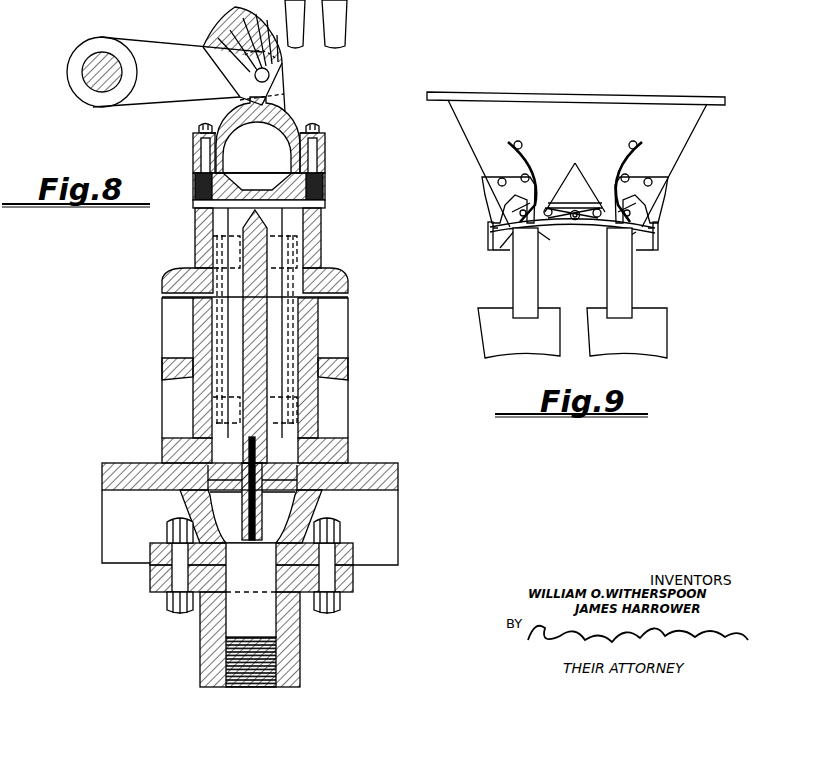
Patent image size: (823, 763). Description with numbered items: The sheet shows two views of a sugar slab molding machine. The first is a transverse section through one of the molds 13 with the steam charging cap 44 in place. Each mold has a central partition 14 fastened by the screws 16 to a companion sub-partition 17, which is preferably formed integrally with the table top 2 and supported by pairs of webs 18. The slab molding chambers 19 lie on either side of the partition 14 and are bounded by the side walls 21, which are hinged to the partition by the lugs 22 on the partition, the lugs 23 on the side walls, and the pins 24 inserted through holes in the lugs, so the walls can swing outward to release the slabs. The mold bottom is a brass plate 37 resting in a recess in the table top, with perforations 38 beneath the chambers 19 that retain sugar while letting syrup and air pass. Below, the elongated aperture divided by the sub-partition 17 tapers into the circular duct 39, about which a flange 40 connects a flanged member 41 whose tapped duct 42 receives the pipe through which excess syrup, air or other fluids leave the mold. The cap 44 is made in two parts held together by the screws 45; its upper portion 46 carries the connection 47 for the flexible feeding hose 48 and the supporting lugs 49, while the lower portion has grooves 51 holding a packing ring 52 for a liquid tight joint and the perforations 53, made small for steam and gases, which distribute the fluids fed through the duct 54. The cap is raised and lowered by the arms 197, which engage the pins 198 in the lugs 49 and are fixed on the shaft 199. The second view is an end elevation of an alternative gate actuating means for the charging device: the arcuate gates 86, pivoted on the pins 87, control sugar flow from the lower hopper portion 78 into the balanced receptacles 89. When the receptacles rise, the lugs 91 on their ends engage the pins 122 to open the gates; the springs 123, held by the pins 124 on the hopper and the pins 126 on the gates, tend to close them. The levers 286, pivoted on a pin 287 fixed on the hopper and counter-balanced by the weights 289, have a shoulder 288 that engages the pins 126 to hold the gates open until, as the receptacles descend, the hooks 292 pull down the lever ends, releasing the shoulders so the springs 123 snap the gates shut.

In FIG. 8, the table top 2 is at (396, 480).
In FIG. 8, the mold 13 is at (337, 313).
In FIG. 8, the central partition 14 is at (290, 351).
In FIG. 8, the screws 16 is at (236, 493).
In FIG. 8, the sub-partition 17 is at (275, 496).
In FIG. 8, the webs 18 is at (236, 519).
In FIG. 8, the slab molding chambers 19 is at (218, 347).
In FIG. 8, the side walls 21 is at (193, 327).
In FIG. 8, the lugs on the partition 22 is at (212, 241).
In FIG. 8, the lugs on the side walls 23 is at (216, 264).
In FIG. 8, the pins 24 is at (213, 228).
In FIG. 8, the brass plate 37 is at (300, 462).
In FIG. 8, the perforations 38 is at (222, 460).
In FIG. 8, the circular duct 39 is at (263, 588).
In FIG. 8, the flange 40 is at (348, 553).
In FIG. 8, the flanged member 41 is at (350, 588).
In FIG. 8, the duct 42 is at (268, 625).
In FIG. 8, the cap 44 is at (300, 120).
In FIG. 8, the screws 45 is at (199, 127).
In FIG. 8, the upper portion 46 is at (323, 160).
In FIG. 8, the connection 47 is at (286, 97).
In FIG. 8, the flexible feeding hose 48 is at (228, 34).
In FIG. 8, the supporting lugs 49 is at (286, 86).
In FIG. 8, the grooves 51 is at (325, 190).
In FIG. 8, the packing ring 52 is at (200, 190).
In FIG. 8, the perforations 53 is at (255, 186).
In FIG. 8, the duct 54 is at (268, 149).
In FIG. 8, the arms 197 is at (156, 98).
In FIG. 8, the pins 198 is at (254, 77).
In FIG. 8, the shaft 199 is at (92, 60).
In FIG. 9, the lower portion of the lower hopper 78 is at (698, 104).
In FIG. 9, the arcuate shaped gates 86 is at (520, 234).
In FIG. 9, the pins 87 is at (530, 178).
In FIG. 9, the balanced receptacles 89 is at (492, 337).
In FIG. 9, the lugs 91 is at (521, 287).
In FIG. 9, the pins 122 is at (497, 182).
In FIG. 9, the springs 123 is at (555, 146).
In FIG. 9, the pins 124 is at (533, 130).
In FIG. 9, the pins 126 is at (518, 214).
In FIG. 9, the levers 286 is at (556, 222).
In FIG. 9, the pin 287 is at (580, 200).
In FIG. 9, the shoulder 288 is at (535, 230).
In FIG. 9, the weights 289 is at (550, 207).
In FIG. 9, the hooks 292 is at (488, 237).